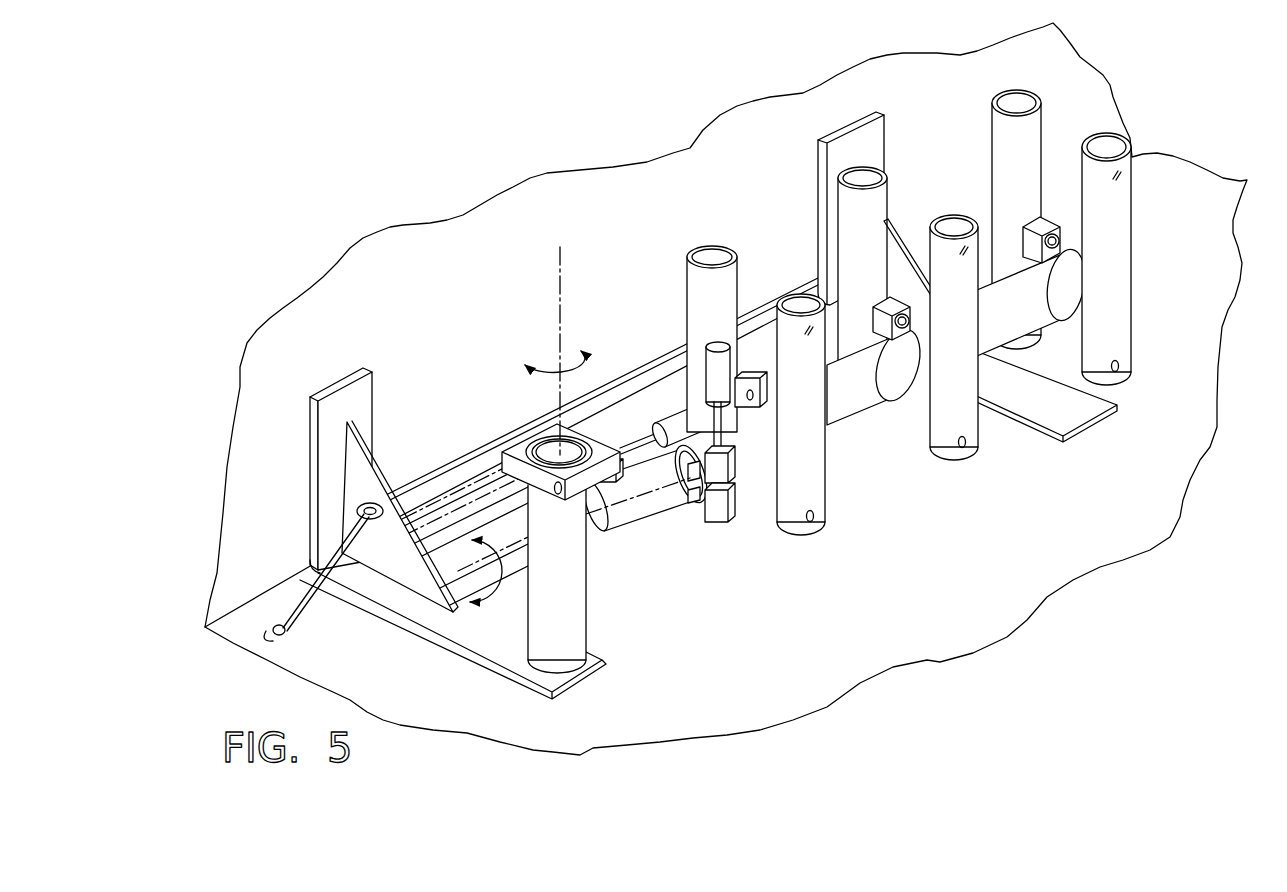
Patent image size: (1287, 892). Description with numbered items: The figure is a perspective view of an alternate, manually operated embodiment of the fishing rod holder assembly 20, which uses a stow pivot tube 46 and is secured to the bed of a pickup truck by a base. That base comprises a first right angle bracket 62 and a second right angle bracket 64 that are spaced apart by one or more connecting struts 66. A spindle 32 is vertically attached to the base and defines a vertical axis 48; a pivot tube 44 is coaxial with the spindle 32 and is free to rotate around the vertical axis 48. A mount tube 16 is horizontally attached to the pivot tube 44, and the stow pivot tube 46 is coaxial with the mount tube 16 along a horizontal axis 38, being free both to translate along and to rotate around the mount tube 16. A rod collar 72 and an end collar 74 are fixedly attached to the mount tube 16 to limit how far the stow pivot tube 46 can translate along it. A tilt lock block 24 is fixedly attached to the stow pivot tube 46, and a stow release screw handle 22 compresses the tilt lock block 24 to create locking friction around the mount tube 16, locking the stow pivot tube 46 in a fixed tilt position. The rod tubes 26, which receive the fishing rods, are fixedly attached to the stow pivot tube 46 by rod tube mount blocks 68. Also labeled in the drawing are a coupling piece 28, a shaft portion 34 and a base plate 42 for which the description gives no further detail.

The mount tube 16 is at (675, 509).
The fishing rod holder assembly 20 is at (737, 185).
The stow release screw handle 22 is at (677, 428).
The tilt lock block 24 is at (730, 463).
The rod tubes 26 is at (1015, 141).
The coupling 28 is at (673, 423).
The spindle 32 is at (547, 447).
The shaft portion 34 is at (652, 499).
The horizontal axis 38 is at (500, 565).
The base plate 42 is at (610, 668).
The pivot tube 44 is at (579, 573).
The stow pivot tube 46 is at (868, 388).
The vertical axis 48 is at (556, 311).
The first right angle bracket 62 is at (507, 634).
The second right angle bracket 64 is at (1052, 409).
The connecting struts 66 is at (464, 455).
The rod tube mount blocks 68 is at (923, 391).
The rod collar 72 is at (704, 508).
The end collar 74 is at (1072, 228).